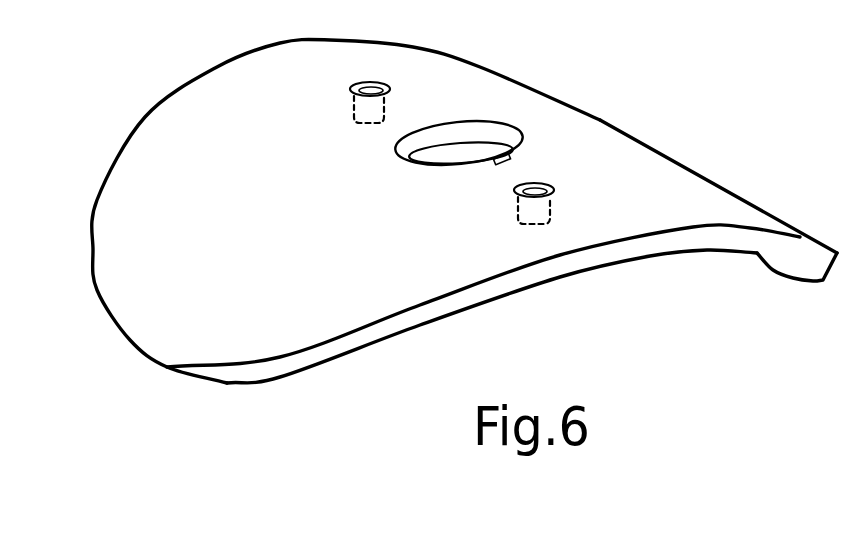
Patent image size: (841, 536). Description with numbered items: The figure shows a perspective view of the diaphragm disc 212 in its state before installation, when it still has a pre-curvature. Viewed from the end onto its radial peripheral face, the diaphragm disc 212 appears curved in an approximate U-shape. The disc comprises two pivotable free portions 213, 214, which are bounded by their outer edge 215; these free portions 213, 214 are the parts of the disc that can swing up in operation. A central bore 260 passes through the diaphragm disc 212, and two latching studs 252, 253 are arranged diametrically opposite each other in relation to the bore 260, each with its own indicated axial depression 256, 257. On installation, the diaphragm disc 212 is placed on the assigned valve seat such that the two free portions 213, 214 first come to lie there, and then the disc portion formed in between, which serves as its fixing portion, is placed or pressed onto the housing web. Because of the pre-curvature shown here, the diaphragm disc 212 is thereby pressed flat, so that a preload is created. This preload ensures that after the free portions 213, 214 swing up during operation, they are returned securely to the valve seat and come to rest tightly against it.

The diaphragm disc 212 is at (145, 117).
The free portion 213 is at (249, 263).
The free portion 214 is at (703, 203).
The outer edge 215 is at (584, 259).
The latching stud 252 is at (352, 112).
The latching stud 253 is at (535, 226).
The axial depression 256 is at (368, 90).
The axial depression 257 is at (536, 188).
The central bore 260 is at (513, 127).